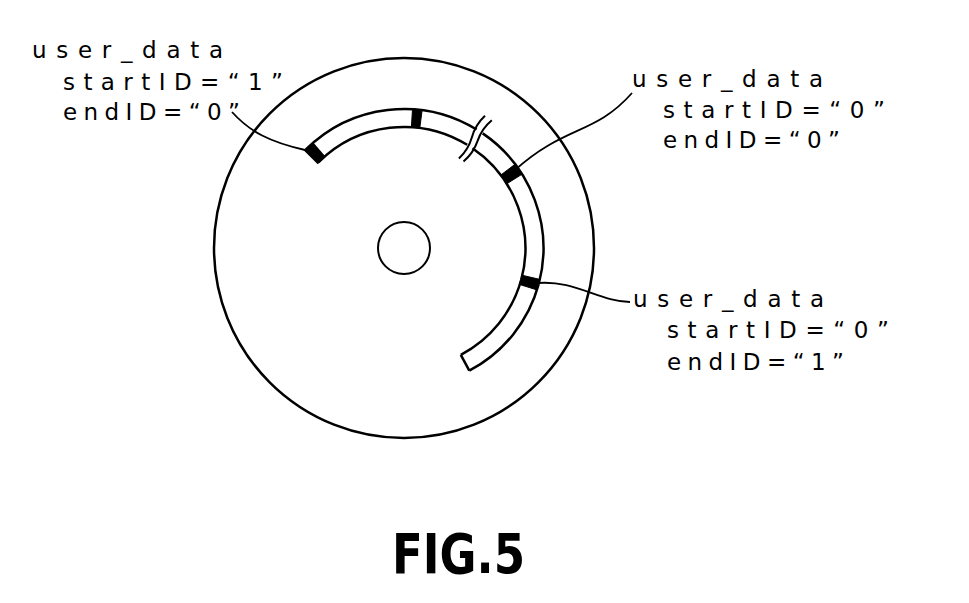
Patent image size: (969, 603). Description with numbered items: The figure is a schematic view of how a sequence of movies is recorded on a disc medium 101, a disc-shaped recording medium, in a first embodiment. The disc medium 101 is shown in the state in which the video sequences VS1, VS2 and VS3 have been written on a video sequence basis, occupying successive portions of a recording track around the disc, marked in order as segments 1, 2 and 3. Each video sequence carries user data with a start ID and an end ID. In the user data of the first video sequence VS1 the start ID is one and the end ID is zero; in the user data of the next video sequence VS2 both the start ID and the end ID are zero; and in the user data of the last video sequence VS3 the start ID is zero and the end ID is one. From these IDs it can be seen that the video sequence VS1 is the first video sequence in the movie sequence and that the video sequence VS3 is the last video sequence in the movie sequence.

The disc medium 101 is at (517, 93).
The first video sequence VS1 is at (360, 123).
The video sequence VS2 is at (536, 219).
The last video sequence VS3 is at (489, 347).
The first segment number 1 is at (378, 161).
The second segment number 2 is at (492, 226).
The third segment number 3 is at (470, 309).